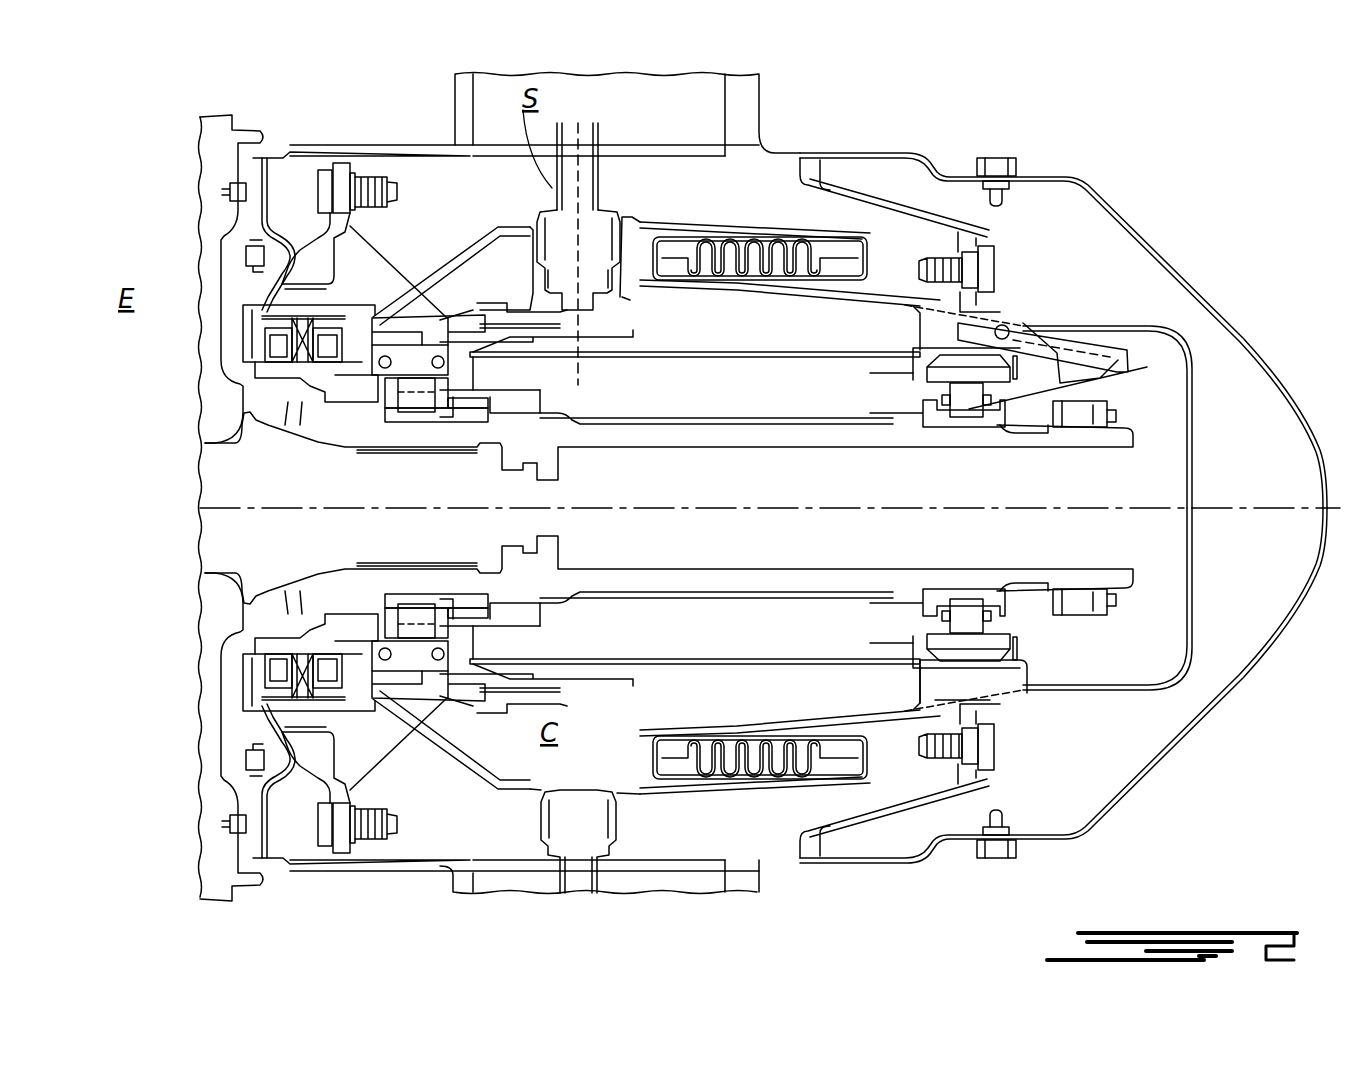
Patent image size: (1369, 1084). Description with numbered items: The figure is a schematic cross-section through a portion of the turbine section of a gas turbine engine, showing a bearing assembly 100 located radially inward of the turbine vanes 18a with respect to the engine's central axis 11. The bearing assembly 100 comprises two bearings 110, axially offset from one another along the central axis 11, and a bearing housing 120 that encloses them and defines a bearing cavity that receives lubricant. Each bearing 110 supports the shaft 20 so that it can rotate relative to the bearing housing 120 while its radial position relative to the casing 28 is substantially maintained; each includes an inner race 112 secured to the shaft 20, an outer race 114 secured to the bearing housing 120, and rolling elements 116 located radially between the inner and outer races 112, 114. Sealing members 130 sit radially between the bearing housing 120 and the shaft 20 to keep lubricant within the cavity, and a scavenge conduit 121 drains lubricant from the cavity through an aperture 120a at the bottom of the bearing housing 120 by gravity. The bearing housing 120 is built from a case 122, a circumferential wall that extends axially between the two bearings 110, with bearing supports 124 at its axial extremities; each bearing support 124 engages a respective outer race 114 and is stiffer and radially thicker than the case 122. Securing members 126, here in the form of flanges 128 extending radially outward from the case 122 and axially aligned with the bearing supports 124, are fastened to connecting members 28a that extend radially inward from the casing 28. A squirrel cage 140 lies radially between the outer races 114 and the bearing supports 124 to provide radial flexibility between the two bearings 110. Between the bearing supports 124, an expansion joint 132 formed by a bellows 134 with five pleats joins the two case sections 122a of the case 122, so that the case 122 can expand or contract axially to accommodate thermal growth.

The central axis 11 is at (1250, 507).
The vanes 18a is at (758, 96).
The shaft 20 is at (848, 450).
The casing 28 is at (811, 148).
The connecting members 28a is at (850, 156).
The bearing assembly 100 is at (1040, 228).
The bearings 110 is at (390, 428).
The inner race 112 is at (986, 420).
The outer race 114 is at (1002, 650).
The rolling elements 116 is at (1002, 616).
The bearing housing 120 is at (473, 782).
The aperture 120a is at (577, 790).
The scavenge conduit 121 is at (551, 876).
The case 122 is at (657, 796).
The case sections 122a is at (708, 786).
The bearing supports 124 is at (432, 698).
The securing members 126 is at (365, 218).
The flanges 128 is at (934, 237).
The sealing members 130 is at (240, 357).
The expansion joint 132 is at (697, 196).
The bellows 134 is at (757, 786).
The squirrel cage 140 is at (673, 362).